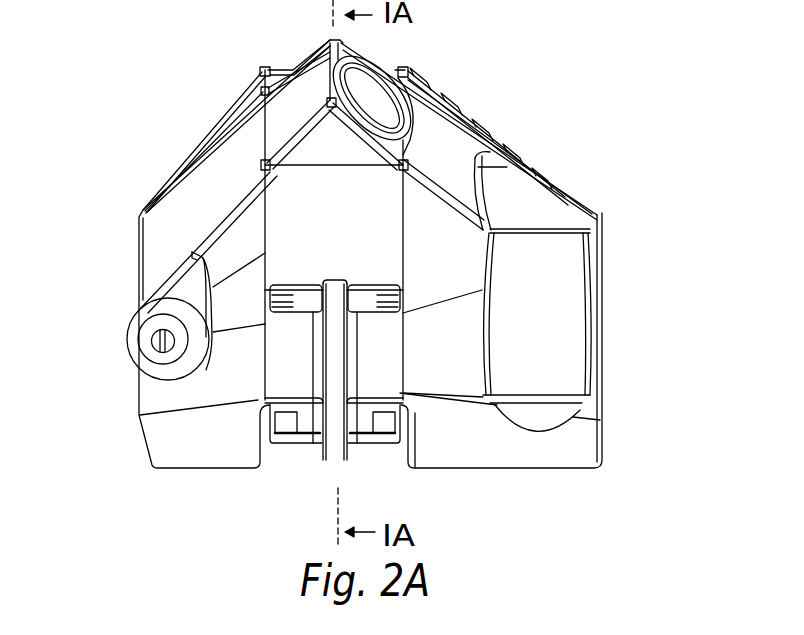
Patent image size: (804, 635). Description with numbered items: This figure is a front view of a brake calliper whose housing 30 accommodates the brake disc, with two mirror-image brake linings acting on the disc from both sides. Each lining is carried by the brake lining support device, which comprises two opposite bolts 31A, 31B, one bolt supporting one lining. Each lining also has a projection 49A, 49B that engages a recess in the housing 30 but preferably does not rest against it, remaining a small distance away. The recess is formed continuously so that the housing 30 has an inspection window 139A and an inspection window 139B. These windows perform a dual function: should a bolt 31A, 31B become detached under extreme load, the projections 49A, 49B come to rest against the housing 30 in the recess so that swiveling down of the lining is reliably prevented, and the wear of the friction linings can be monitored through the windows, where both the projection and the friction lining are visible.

The housing 30 is at (440, 153).
The inspection window 139A is at (312, 300).
The inspection window 139B is at (356, 298).
The projection 49A is at (197, 251).
The projection 49B is at (406, 290).
The bolt 31A is at (305, 443).
The bolt 31B is at (377, 443).